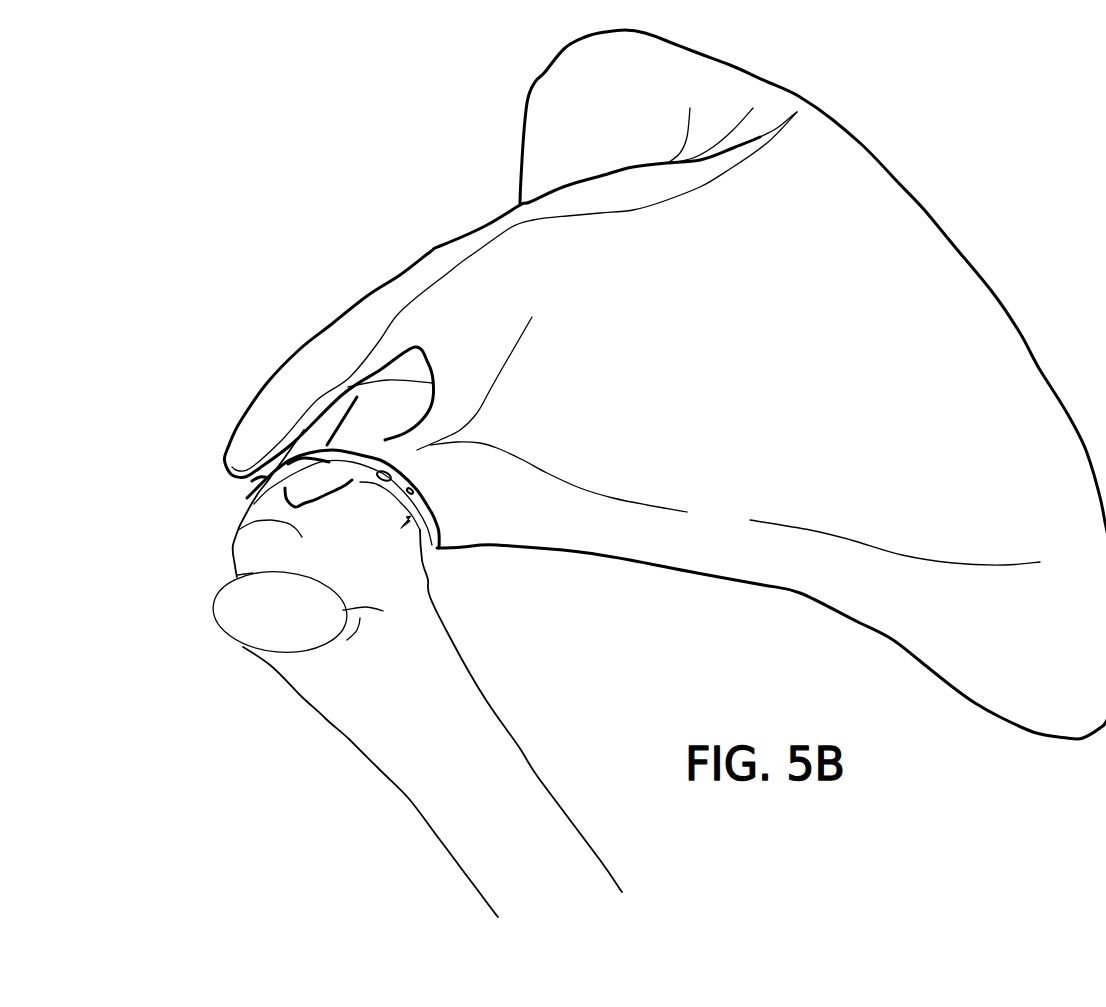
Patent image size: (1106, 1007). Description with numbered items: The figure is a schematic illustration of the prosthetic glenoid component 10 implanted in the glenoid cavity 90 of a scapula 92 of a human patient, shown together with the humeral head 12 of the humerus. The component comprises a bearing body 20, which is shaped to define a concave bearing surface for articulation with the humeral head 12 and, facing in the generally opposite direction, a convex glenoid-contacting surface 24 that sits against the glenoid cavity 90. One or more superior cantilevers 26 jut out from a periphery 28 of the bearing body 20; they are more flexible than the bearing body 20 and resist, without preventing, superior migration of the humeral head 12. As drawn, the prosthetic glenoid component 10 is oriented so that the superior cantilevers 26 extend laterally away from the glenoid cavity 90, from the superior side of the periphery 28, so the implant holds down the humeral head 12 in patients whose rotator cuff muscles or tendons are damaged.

The prosthetic glenoid component 10 is at (315, 445).
The humeral head 12 is at (238, 530).
The bearing body 20 is at (410, 517).
The convex glenoid-contacting surface 24 is at (410, 492).
The superior cantilevers 26 is at (265, 493).
The periphery 28 is at (388, 498).
The glenoid cavity 90 is at (432, 580).
The scapula 92 is at (443, 350).